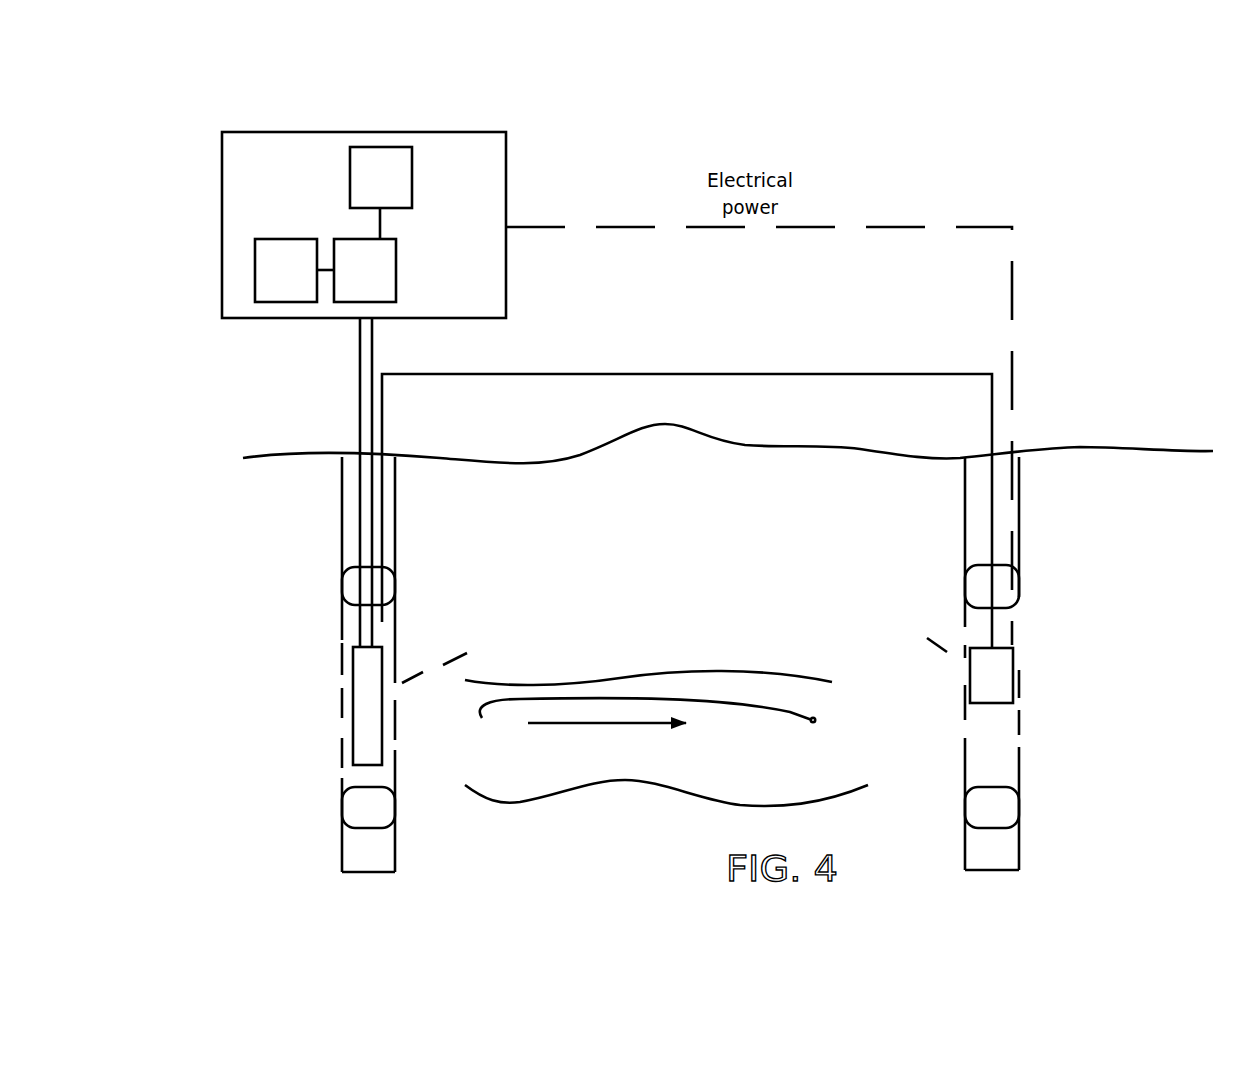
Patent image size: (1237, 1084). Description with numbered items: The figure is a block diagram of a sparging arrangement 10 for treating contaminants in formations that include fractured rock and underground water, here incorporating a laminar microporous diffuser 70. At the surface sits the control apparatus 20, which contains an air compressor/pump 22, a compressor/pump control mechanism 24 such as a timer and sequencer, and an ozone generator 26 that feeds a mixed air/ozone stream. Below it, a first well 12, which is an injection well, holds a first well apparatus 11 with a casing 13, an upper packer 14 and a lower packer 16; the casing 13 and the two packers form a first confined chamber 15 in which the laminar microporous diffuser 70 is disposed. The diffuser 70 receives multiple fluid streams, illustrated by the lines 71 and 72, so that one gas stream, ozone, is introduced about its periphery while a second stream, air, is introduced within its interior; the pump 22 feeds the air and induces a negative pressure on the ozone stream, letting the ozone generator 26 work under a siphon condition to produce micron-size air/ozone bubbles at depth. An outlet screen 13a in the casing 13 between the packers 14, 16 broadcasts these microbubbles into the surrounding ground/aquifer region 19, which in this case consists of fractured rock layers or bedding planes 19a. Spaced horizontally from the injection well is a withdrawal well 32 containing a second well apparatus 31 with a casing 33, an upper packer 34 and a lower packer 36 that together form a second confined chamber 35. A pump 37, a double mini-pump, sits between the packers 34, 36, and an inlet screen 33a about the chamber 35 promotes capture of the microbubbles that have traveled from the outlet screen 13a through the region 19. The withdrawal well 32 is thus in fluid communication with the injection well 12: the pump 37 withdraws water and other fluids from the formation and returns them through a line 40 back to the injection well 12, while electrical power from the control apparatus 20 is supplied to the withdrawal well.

The sparging arrangement 10 is at (958, 178).
The first well apparatus 11 is at (340, 560).
The first well 12 is at (340, 480).
The casing 13 is at (398, 502).
The outlet screen 13a is at (482, 652).
The upper packer 14 is at (396, 588).
The first confined chamber 15 is at (347, 632).
The lower packer 16 is at (398, 808).
The surrounding ground/aquifer region 19 is at (728, 453).
The fractured rock layers or bedding planes 19a is at (666, 738).
The control apparatus 20 is at (278, 132).
The air compressor/pump 22 is at (365, 270).
The compressor/pump control mechanism 24 is at (294, 270).
The ozone generator 26 is at (381, 193).
The second well apparatus 31 is at (965, 560).
The withdrawal well 32 is at (998, 629).
The casing 33 is at (1022, 502).
The inlet screen 33a is at (889, 645).
The upper packer 34 is at (1020, 585).
The second confined chamber 35 is at (967, 622).
The lower packer 36 is at (1020, 807).
The pump 37 is at (1015, 675).
The line 40 is at (687, 480).
The laminar microporous diffuser 70 is at (352, 705).
The line 71 is at (358, 395).
The line 72 is at (373, 332).